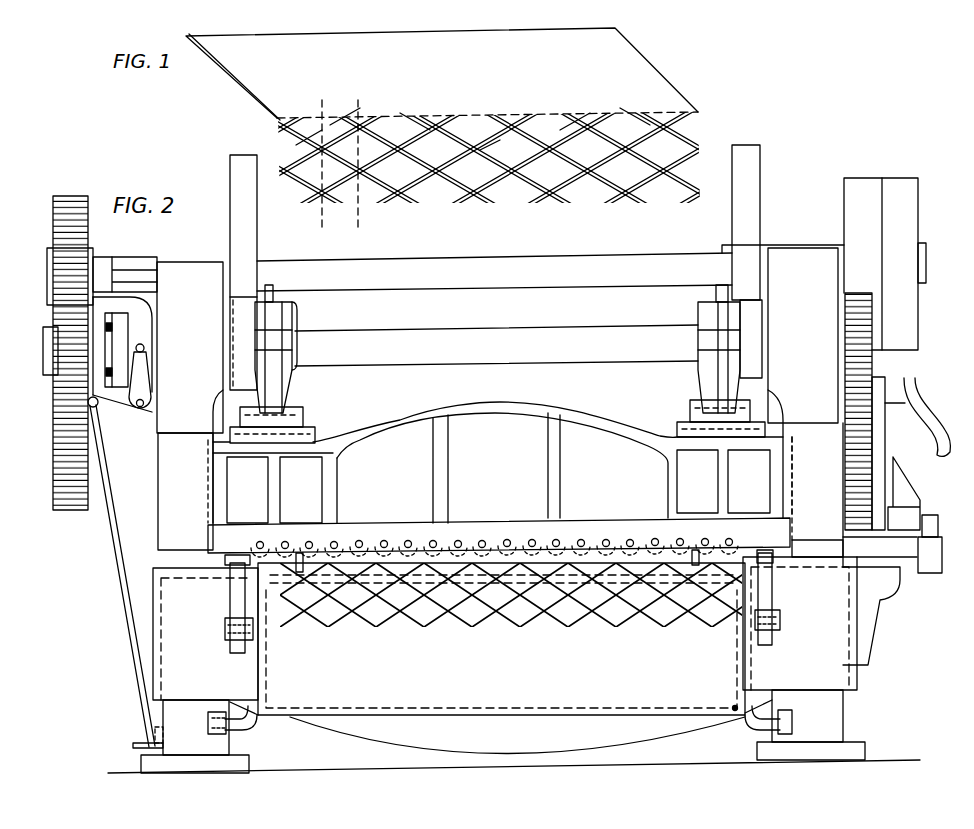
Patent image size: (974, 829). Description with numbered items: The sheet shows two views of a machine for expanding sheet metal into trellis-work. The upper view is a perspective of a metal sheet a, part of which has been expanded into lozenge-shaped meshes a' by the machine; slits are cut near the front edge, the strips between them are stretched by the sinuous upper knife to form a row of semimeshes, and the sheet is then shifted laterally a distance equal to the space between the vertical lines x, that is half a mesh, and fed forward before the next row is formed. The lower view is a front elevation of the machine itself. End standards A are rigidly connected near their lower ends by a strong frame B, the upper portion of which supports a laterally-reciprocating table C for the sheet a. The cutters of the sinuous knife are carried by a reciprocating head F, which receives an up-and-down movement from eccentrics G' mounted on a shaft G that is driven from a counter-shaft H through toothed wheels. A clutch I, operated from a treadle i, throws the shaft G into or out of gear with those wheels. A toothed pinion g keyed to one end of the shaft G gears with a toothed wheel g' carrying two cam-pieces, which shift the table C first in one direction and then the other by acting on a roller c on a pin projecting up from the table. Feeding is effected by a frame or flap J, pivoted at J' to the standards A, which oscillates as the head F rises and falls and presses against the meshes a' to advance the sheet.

In FIG. 1, the metal sheet a is at (442, 74).
In FIG. 2, the metal sheet a is at (503, 547).
In FIG. 1, the meshes a' is at (490, 222).
In FIG. 2, the meshes a' is at (511, 595).
In FIG. 1, the vertical lines x is at (337, 175).
In FIG. 2, the clutch I is at (122, 354).
In FIG. 2, the treadle i is at (135, 744).
In FIG. 2, the end standards A is at (497, 340).
In FIG. 2, the counter-shaft H is at (494, 272).
In FIG. 2, the shaft G is at (496, 345).
In FIG. 2, the eccentrics G' is at (497, 364).
In FIG. 2, the reciprocating head F is at (500, 456).
In FIG. 2, the frame or flap J is at (501, 658).
In FIG. 2, the pivots J' is at (493, 719).
In FIG. 2, the frame B is at (505, 628).
In FIG. 2, the toothed pinion g is at (870, 411).
In FIG. 2, the toothed wheel g' is at (858, 453).
In FIG. 2, the roller c is at (940, 524).
In FIG. 2, the laterally-reciprocating table C is at (930, 555).